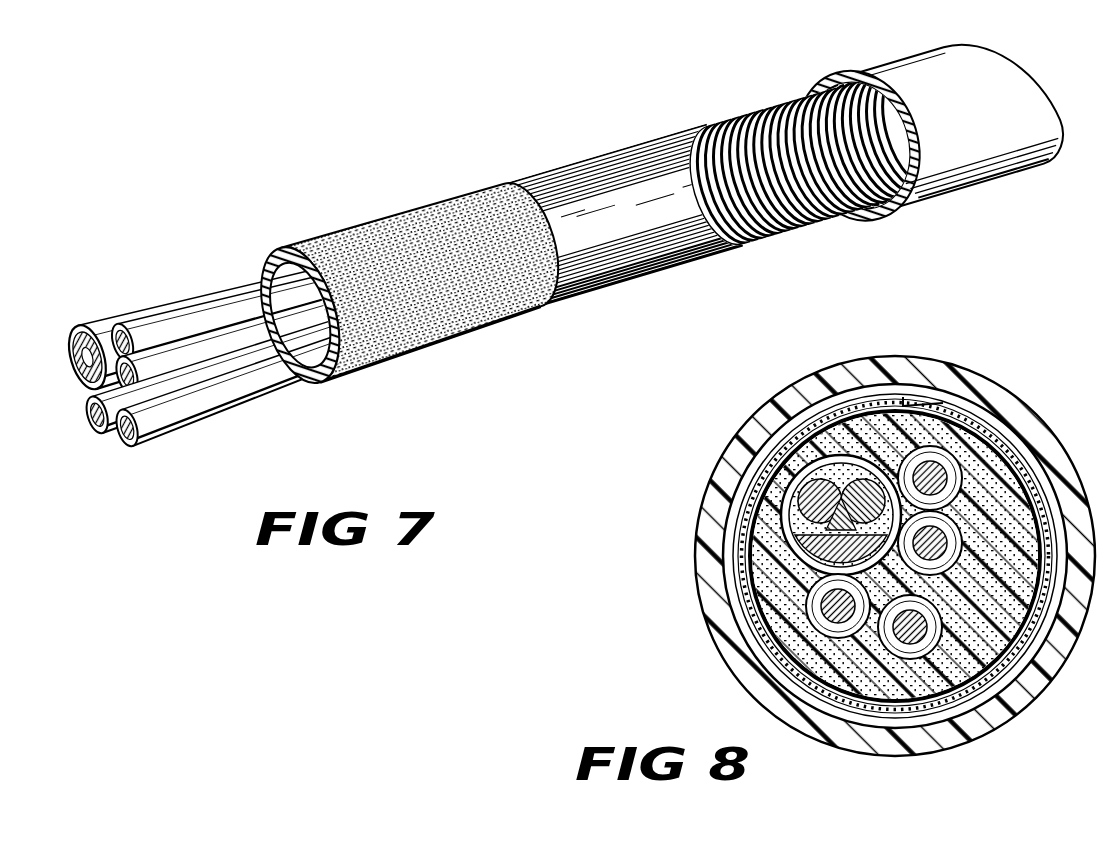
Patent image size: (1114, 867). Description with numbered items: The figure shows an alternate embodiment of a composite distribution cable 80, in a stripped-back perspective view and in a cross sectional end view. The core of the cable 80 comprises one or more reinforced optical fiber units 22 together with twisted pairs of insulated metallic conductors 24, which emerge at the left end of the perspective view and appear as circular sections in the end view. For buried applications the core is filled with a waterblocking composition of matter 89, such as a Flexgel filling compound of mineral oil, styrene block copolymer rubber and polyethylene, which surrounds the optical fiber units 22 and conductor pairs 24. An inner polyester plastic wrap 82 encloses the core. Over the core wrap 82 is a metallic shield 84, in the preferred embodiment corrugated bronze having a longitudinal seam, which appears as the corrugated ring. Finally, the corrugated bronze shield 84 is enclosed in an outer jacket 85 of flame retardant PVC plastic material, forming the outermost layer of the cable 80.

In FIG. 7, the cable 80 is at (567, 236).
In FIG. 8, the cable 80 is at (886, 536).
In FIG. 7, the inner polyester plastic wrap 82 is at (607, 159).
In FIG. 8, the inner polyester plastic wrap 82 is at (1027, 497).
In FIG. 7, the metallic shield 84 is at (731, 118).
In FIG. 8, the metallic shield 84 is at (812, 420).
In FIG. 7, the outer jacket 85 is at (1017, 97).
In FIG. 8, the outer jacket 85 is at (720, 490).
In FIG. 7, the waterblocking composition of matter 89 is at (363, 233).
In FIG. 8, the waterblocking composition of matter 89 is at (960, 453).
In FIG. 7, the reinforced optical fiber unit 22 is at (106, 315).
In FIG. 8, the reinforced optical fiber unit 22 is at (803, 552).
In FIG. 7, the insulated metallic conductors 24 is at (228, 341).
In FIG. 8, the insulated metallic conductors 24 is at (833, 645).